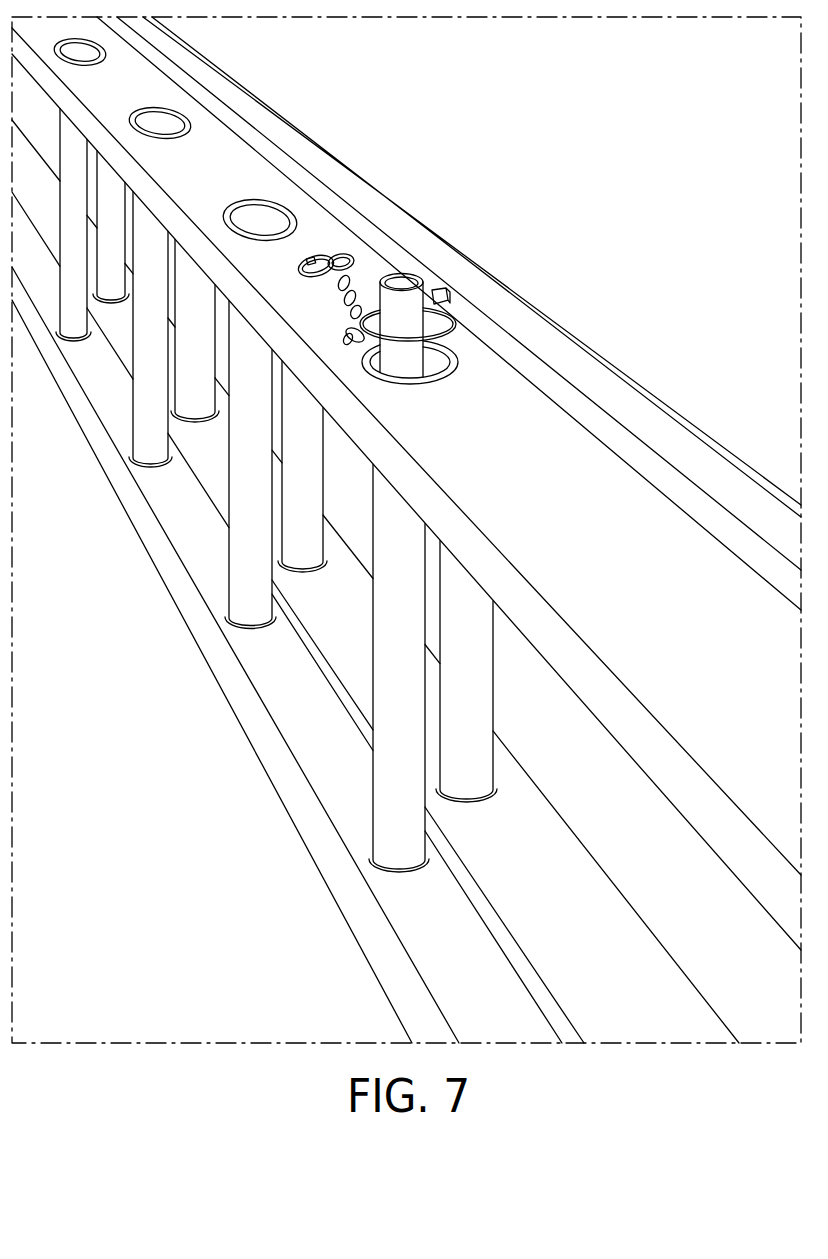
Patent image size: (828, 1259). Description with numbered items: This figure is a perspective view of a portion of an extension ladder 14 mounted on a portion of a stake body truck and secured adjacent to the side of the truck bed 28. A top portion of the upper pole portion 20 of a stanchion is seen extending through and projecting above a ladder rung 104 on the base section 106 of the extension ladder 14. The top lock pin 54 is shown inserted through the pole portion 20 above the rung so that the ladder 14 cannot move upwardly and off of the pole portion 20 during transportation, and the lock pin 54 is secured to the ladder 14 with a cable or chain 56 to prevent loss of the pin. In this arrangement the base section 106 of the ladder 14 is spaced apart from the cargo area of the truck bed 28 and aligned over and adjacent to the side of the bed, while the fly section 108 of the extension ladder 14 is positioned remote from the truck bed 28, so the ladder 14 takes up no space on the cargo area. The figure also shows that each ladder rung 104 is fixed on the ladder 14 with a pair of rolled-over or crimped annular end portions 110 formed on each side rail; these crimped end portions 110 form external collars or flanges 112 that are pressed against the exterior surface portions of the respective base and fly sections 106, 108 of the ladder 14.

The ladder 14 is at (485, 274).
The upper pole portion 20 is at (400, 297).
The truck bed 28 is at (155, 800).
The top lock pin 54 is at (433, 305).
The chain 56 is at (350, 257).
The ladder rung 104 is at (240, 563).
The base section 106 is at (177, 510).
The fly section 108 is at (353, 650).
The crimped annular end portions 110 is at (365, 336).
The flanges 112 is at (285, 208).